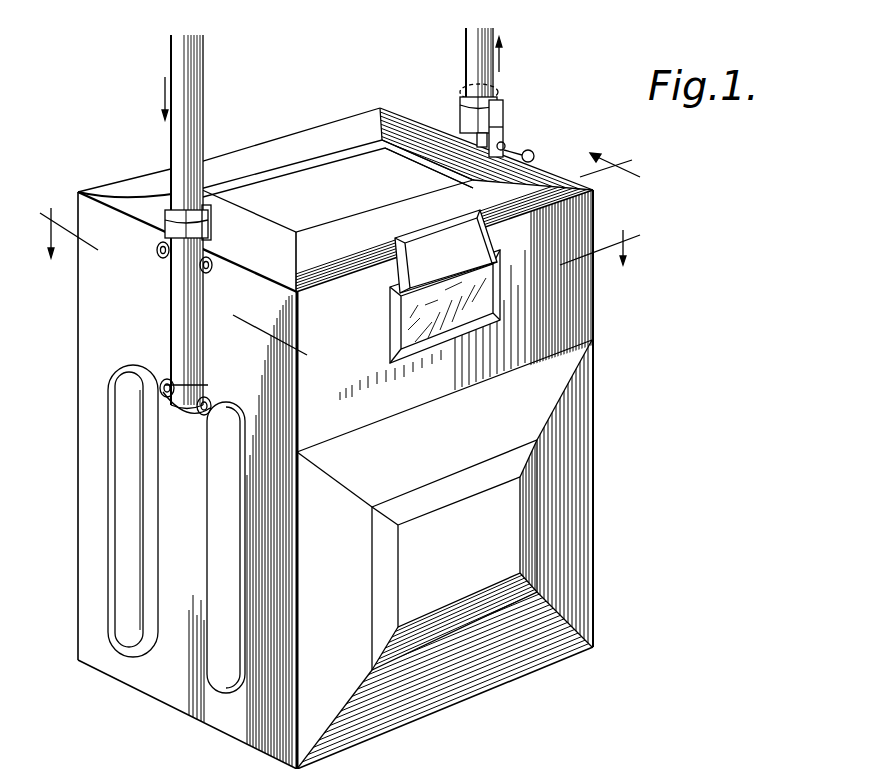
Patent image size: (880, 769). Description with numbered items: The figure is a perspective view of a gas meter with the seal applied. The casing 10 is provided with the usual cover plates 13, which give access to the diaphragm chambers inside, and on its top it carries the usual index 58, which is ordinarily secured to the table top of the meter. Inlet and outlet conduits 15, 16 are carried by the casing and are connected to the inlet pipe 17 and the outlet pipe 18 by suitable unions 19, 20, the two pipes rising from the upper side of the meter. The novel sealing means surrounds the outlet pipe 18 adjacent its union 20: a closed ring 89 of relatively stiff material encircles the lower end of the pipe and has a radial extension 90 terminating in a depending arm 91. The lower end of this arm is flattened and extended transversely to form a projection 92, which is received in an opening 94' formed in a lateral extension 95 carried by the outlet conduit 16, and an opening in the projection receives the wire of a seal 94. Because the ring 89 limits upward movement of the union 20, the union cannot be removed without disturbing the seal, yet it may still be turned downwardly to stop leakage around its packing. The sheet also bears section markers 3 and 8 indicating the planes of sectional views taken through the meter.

The casing 10 is at (77, 569).
The cover plates 13 is at (590, 437).
The inlet conduit 15 is at (175, 315).
The outlet conduit 16 is at (460, 135).
The inlet pipe 17 is at (176, 135).
The outlet pipe 18 is at (470, 60).
The union 19 is at (167, 222).
The union 20 is at (500, 105).
The index 58 is at (390, 338).
The ring 89 is at (497, 88).
The radial extension 90 is at (503, 109).
The depending arm 91 is at (416, 156).
The projection 92 is at (506, 145).
The seal 94 is at (541, 156).
The opening 94' is at (422, 173).
The lateral extension 95 is at (503, 127).
The section line 3- 3 is at (343, 274).
The section line 8 is at (617, 158).